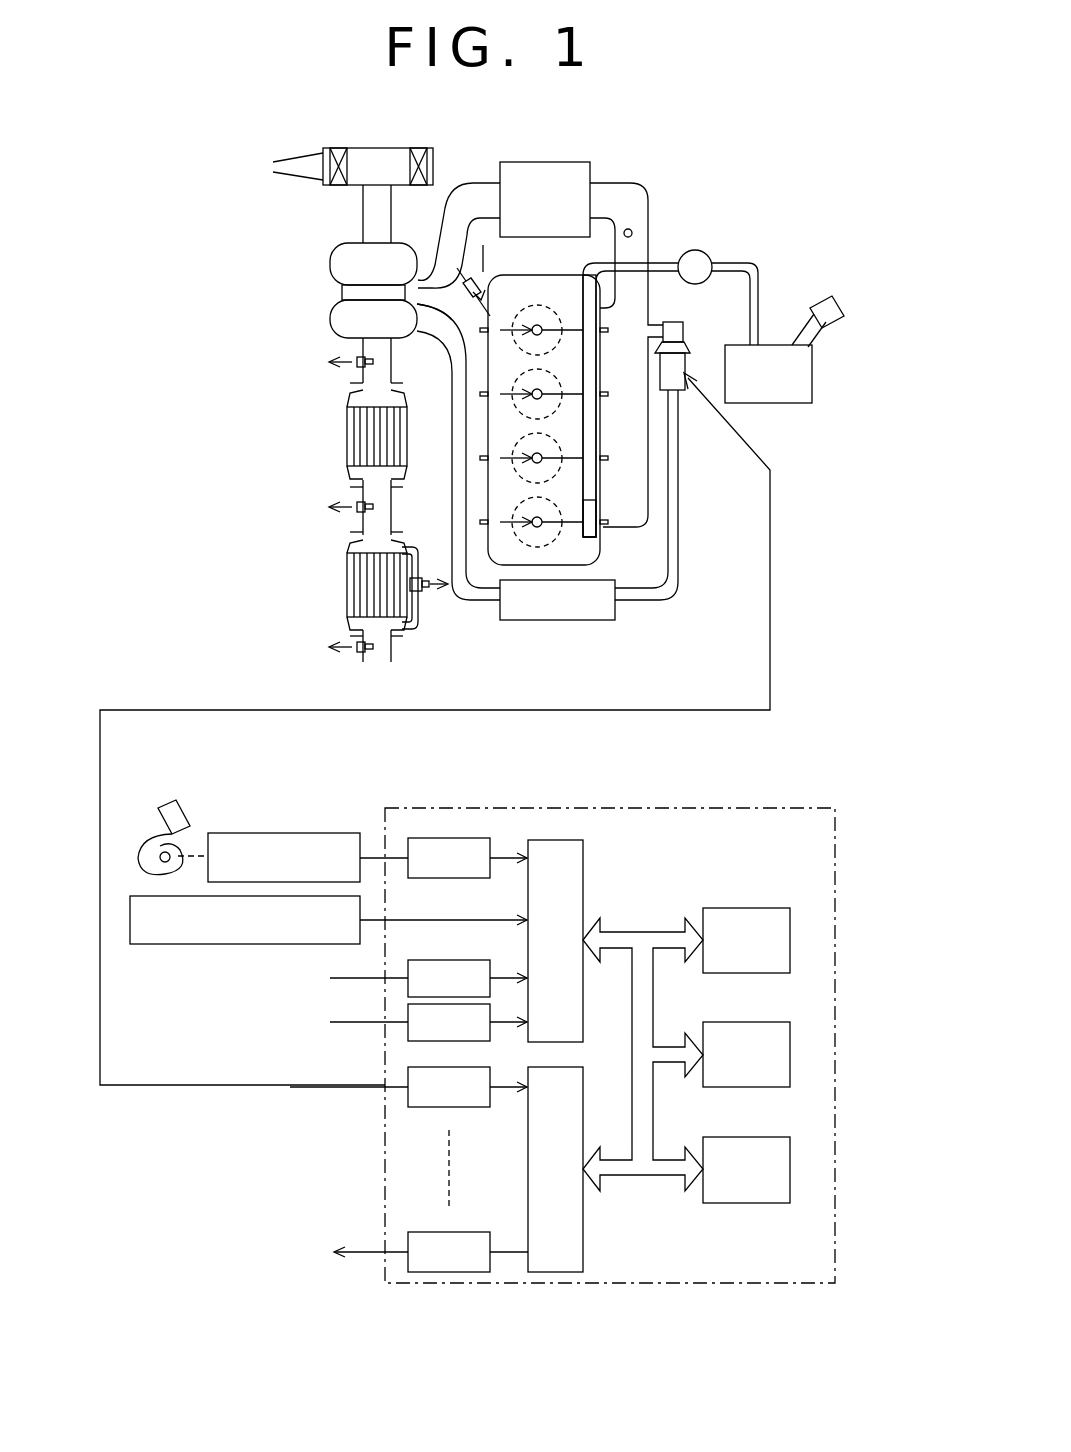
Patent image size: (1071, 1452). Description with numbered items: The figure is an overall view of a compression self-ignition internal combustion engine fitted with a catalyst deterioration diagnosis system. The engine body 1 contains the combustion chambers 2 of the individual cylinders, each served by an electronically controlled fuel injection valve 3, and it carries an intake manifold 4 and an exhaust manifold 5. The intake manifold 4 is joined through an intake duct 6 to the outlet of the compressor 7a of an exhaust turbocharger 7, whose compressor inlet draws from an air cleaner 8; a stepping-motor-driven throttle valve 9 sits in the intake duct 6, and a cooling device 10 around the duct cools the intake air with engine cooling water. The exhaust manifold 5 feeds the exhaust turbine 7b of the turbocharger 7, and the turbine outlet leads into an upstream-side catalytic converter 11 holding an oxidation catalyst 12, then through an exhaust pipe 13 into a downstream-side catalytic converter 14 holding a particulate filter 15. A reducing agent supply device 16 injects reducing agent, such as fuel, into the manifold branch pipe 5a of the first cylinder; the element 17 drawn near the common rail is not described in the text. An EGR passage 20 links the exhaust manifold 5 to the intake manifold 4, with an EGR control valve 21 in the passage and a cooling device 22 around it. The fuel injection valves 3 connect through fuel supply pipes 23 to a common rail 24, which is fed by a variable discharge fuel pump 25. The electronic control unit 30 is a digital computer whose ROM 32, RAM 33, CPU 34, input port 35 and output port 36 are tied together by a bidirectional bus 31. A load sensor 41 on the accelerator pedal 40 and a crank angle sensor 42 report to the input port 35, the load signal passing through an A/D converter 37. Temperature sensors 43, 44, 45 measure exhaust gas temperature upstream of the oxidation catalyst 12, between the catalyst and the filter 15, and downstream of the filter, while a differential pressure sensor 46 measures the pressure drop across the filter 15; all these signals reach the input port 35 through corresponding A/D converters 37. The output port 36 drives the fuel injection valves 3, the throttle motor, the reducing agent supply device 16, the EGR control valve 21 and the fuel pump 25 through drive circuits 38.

The engine body 1 is at (614, 551).
The combustion chambers 2 is at (532, 405).
The fuel injection valves 3 is at (536, 308).
The intake manifold 4 is at (648, 503).
The exhaust manifold 5 is at (460, 515).
The manifold branch pipe 5a is at (453, 338).
The intake duct 6 is at (630, 192).
The exhaust turbocharger 7 is at (318, 290).
The compressor 7a is at (336, 268).
The exhaust turbine 7b is at (336, 328).
The air cleaner 8 is at (375, 156).
The throttle valve 9 is at (632, 230).
The cooling device 10 is at (538, 170).
The upstream-side catalytic converter 11 is at (402, 396).
The oxidation catalyst 12 is at (400, 450).
The exhaust pipe 13 is at (398, 499).
The downstream-side catalytic converter 14 is at (348, 552).
The particulate filter 15 is at (348, 598).
The reducing agent supply device 16 is at (445, 250).
The fuel rail end 17 is at (573, 534).
The EGR passage 20 is at (680, 577).
The EGR control valve 21 is at (685, 331).
The cooling device 22 is at (578, 622).
The fuel supply pipes 23 is at (582, 300).
The common rail 24 is at (597, 467).
The fuel pump 25 is at (704, 252).
The electronic control unit 30 is at (838, 846).
The bidirectional bus 31 is at (641, 937).
The read only memory (ROM) 32 is at (748, 909).
The random access memory (RAM) 33 is at (748, 1023).
The microprocessor (CPU) 34 is at (748, 1138).
The input port 35 is at (585, 866).
The output port 36 is at (585, 1244).
The A/D converter 37 is at (440, 838).
The drive circuits 38 is at (408, 1240).
The accelerator pedal 40 is at (172, 822).
The load sensor 41 is at (281, 834).
The crank angle sensor 42 is at (206, 946).
The temperature sensor 43 is at (350, 365).
The temperature sensor 44 is at (356, 505).
The temperature sensor 45 is at (355, 657).
The differential pressure sensor 46 is at (423, 597).